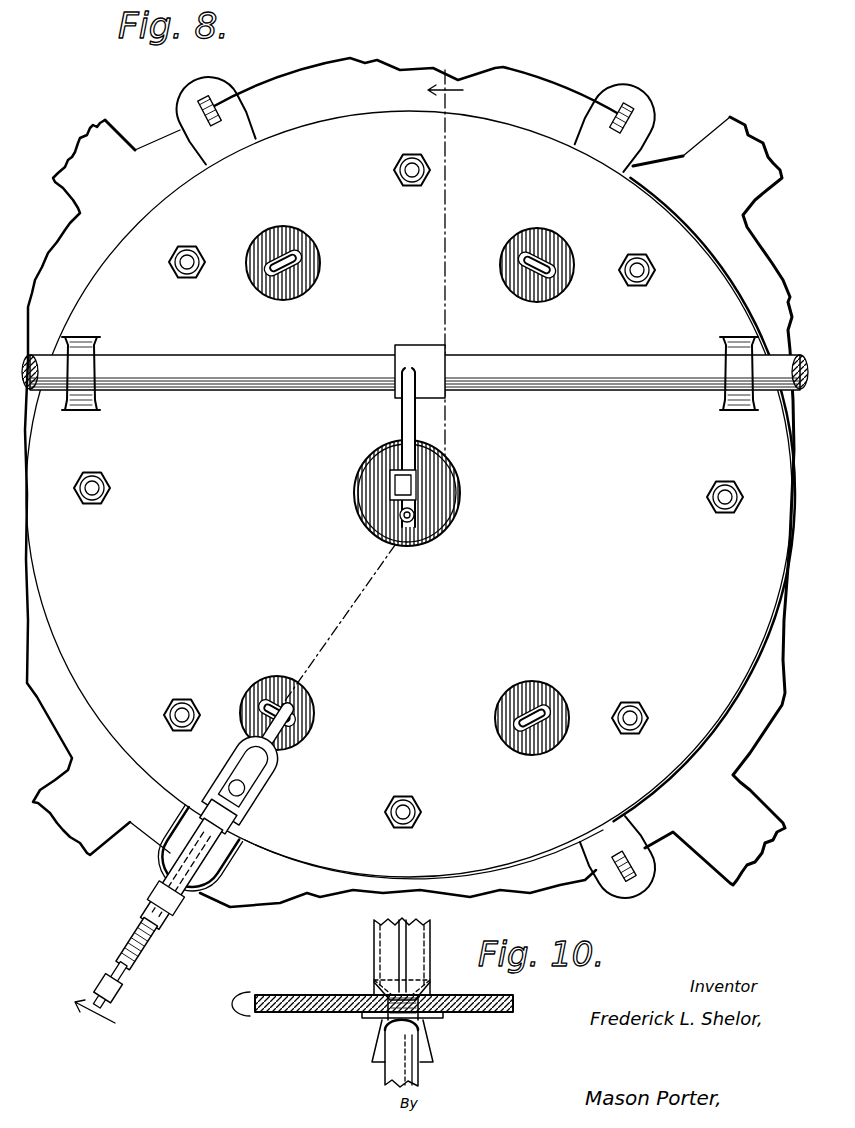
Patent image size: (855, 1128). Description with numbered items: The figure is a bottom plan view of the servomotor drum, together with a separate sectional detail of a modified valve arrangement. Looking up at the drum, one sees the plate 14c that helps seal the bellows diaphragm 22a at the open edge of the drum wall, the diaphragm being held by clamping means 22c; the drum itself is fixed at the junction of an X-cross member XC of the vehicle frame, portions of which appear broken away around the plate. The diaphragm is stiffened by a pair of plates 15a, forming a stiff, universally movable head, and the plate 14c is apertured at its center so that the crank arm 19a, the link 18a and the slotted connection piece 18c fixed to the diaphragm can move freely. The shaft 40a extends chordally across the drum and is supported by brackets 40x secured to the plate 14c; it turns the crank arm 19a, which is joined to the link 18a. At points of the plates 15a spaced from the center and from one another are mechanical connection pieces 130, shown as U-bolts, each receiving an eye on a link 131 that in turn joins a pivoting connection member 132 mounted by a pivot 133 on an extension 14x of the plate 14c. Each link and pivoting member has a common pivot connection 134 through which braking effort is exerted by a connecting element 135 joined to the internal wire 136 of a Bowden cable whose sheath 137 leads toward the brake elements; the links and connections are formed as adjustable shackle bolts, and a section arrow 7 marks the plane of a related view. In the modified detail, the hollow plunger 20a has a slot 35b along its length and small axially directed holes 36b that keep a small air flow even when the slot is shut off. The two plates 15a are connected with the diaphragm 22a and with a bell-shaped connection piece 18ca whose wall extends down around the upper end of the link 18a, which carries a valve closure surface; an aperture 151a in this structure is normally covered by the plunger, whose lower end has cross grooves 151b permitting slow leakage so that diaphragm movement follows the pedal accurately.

In FIG. 8, the plate 14c is at (409, 494).
In FIG. 8, the extension of the plate 14x is at (421, 481).
In FIG. 8, the X-cross member XC is at (410, 494).
In FIG. 8, the pivot 133 is at (429, 498).
In FIG. 8, the section line 7 is at (269, 554).
In FIG. 8, the clamping means 22c is at (408, 490).
In FIG. 8, the plates 15a is at (407, 475).
In FIG. 10, the plates 15a is at (250, 989).
In FIG. 8, the mechanical connection pieces 130 is at (421, 465).
In FIG. 8, the shaft 40a is at (415, 385).
In FIG. 8, the brackets 40x is at (410, 356).
In FIG. 8, the crank arm 19a is at (448, 447).
In FIG. 8, the link 18a is at (345, 500).
In FIG. 10, the link 18a is at (363, 1053).
In FIG. 8, the slotted connection piece 18c is at (439, 536).
In FIG. 8, the link 131 is at (303, 756).
In FIG. 8, the common pivot connection 134 is at (275, 795).
In FIG. 8, the pivoting connection member 132 is at (262, 826).
In FIG. 8, the connecting element 135 is at (208, 891).
In FIG. 8, the internal wire 136 is at (160, 961).
In FIG. 8, the sheath 137 is at (143, 1000).
In FIG. 10, the bellows diaphragm 22a is at (414, 1003).
In FIG. 10, the slot 35b is at (369, 956).
In FIG. 10, the axially directed holes 36b is at (369, 978).
In FIG. 10, the hollow plunger 20a is at (435, 942).
In FIG. 10, the cross grooves 151b is at (446, 956).
In FIG. 10, the aperture 151a is at (429, 991).
In FIG. 10, the connection piece (bell-shaped guide) 18ca is at (434, 1041).